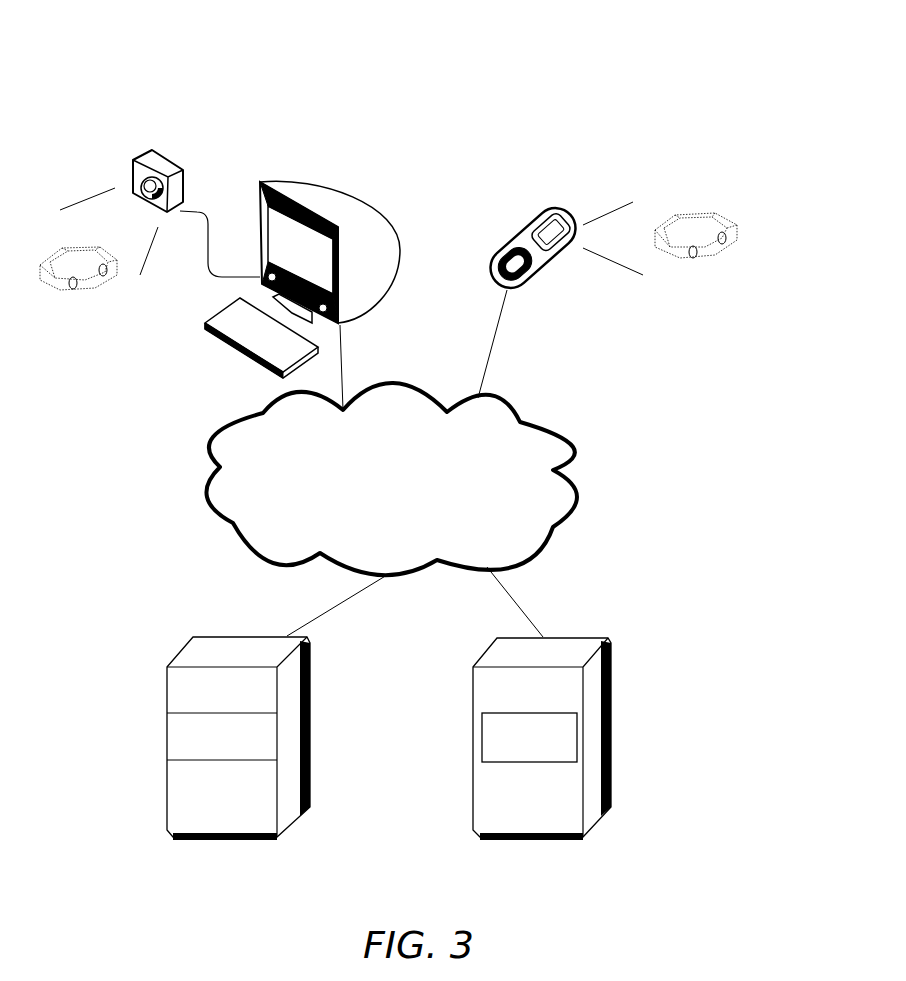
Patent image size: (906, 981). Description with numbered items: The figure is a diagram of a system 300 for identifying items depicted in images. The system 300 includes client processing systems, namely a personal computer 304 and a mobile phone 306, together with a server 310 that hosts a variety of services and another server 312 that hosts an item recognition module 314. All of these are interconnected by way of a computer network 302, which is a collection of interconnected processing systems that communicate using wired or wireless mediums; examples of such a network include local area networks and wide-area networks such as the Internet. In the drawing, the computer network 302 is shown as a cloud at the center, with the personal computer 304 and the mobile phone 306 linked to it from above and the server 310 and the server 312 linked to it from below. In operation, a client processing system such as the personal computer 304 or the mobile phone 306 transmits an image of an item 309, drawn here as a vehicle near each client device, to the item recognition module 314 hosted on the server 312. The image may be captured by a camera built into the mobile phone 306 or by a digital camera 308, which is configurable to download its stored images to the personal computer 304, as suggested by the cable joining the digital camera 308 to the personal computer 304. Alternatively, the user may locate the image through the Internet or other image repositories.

The system 300 is at (530, 48).
The computer network 302 is at (391, 463).
The personal computer 304 is at (330, 187).
The mobile phone 306 is at (555, 208).
The digital camera 308 is at (183, 170).
The item 309 is at (75, 285).
The server 310 is at (237, 637).
The server 312 is at (608, 633).
The item recognition module 314 is at (529, 737).